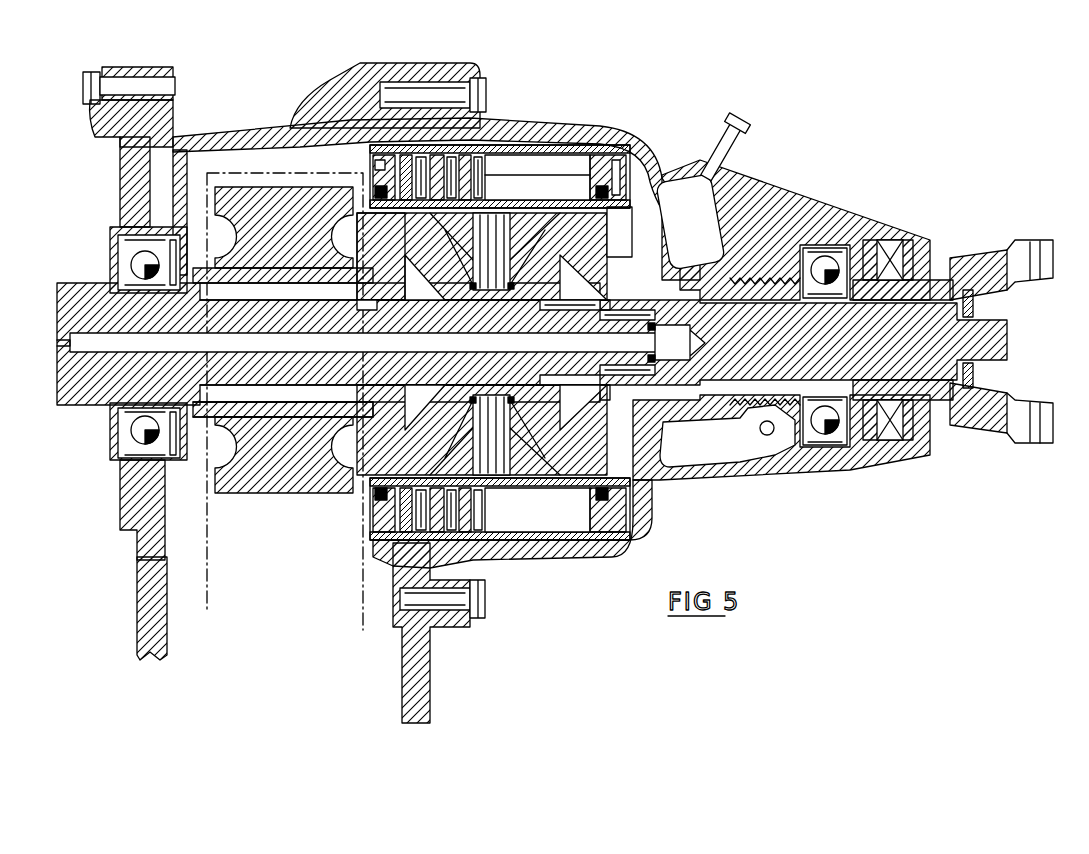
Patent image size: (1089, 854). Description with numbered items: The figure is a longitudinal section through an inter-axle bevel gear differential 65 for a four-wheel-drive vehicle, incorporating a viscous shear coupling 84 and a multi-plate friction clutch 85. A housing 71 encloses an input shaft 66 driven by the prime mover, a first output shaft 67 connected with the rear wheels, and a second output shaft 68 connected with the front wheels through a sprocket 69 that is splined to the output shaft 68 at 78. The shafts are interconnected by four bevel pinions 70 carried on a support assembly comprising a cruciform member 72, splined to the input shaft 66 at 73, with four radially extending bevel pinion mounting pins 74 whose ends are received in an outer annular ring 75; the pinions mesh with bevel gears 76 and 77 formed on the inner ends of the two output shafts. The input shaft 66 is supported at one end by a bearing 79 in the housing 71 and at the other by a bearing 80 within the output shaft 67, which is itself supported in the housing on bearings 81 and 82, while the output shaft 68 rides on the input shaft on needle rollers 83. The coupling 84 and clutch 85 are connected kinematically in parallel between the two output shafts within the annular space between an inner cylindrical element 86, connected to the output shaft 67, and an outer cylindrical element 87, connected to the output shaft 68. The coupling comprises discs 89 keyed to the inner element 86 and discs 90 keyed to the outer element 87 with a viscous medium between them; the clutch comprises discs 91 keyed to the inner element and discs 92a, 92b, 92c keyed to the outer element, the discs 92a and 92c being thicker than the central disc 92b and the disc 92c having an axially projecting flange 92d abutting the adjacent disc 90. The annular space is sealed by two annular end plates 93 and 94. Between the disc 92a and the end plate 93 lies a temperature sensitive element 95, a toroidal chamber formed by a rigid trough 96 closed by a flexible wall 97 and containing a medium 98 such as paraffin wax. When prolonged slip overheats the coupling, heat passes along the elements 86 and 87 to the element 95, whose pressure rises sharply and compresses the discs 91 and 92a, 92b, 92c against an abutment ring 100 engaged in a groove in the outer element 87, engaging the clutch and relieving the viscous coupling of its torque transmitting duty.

The inter-axle bevel gear differential 65 is at (418, 412).
The input shaft 66 is at (95, 393).
The first output shaft 67 is at (905, 385).
The second output shaft 68 is at (235, 432).
The sprocket 69 is at (243, 190).
The bevel pinions 70 is at (560, 390).
The housing 71 is at (226, 130).
The cruciform member 72 is at (483, 478).
The spline 73 is at (492, 388).
The bevel pinion mounting pins 74 is at (492, 251).
The outer annular ring 75 is at (565, 465).
The bevel gear 76 is at (448, 392).
The bevel gear 77 is at (614, 342).
The spline 78 is at (532, 344).
The bearing 79 is at (125, 265).
The bearing 80 is at (660, 330).
The bearing 81 is at (826, 266).
The bearing 82 is at (660, 275).
The needle rollers 83 is at (360, 313).
The viscous shear coupling 84 is at (640, 207).
The multi-plate friction clutch 85 is at (522, 388).
The inner cylindrical element 86 is at (560, 225).
The outer cylindrical element 87 is at (600, 160).
The discs 89 is at (556, 166).
The discs 90 is at (500, 150).
The discs 91 is at (415, 250).
The disc 92a is at (450, 160).
The central disc 92b is at (463, 158).
The disc 92c is at (480, 158).
The axially projecting flange 92d is at (470, 196).
The annular end plate 93 is at (370, 165).
The annular end plate 94 is at (652, 160).
The temperature sensitive element 95 is at (402, 158).
The rigid trough 96 is at (385, 172).
The flexible wall 97 is at (436, 157).
The medium 98 is at (420, 158).
The abutment ring 100 is at (470, 140).